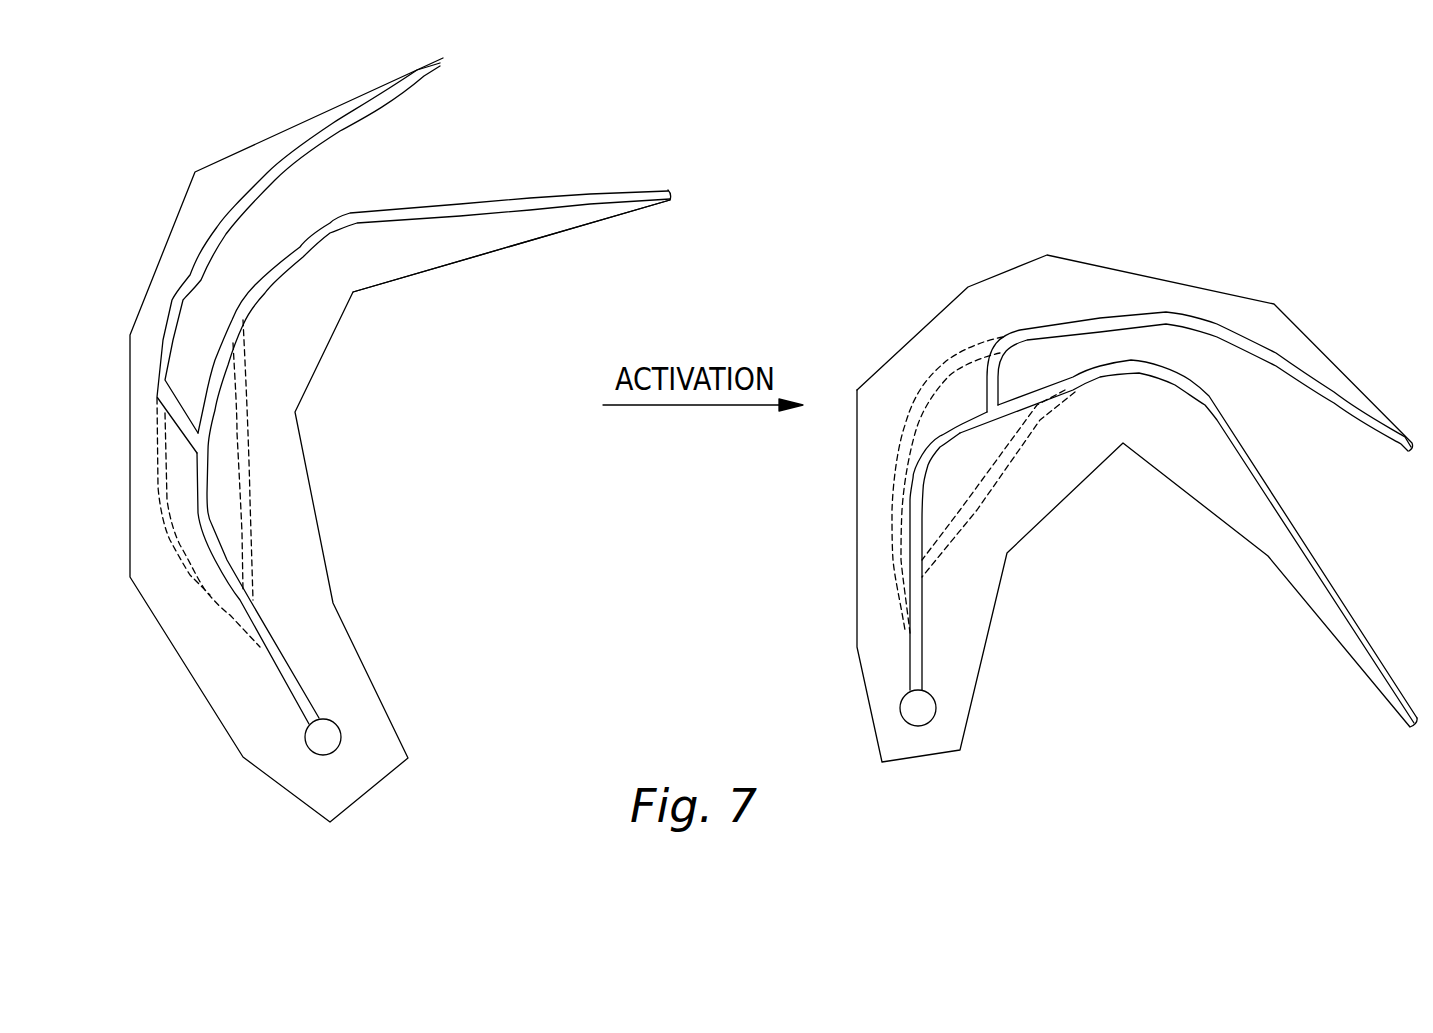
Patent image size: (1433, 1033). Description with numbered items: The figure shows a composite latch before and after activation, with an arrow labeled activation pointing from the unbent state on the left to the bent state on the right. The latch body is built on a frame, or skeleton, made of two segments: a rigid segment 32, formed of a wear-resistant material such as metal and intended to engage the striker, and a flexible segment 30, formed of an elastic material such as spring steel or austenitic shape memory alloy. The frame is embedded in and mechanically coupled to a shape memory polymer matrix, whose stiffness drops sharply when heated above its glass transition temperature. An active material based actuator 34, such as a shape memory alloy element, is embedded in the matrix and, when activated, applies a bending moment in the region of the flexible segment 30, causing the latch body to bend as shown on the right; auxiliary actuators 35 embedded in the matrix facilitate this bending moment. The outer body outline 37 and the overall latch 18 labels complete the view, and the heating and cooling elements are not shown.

The actuator device 18 is at (611, 182).
The flexible segment 30 is at (208, 495).
The rigid segment 32 is at (265, 148).
The active material based actuator 34 is at (243, 380).
The auxiliary actuator 35 is at (203, 602).
The body 37 is at (168, 232).